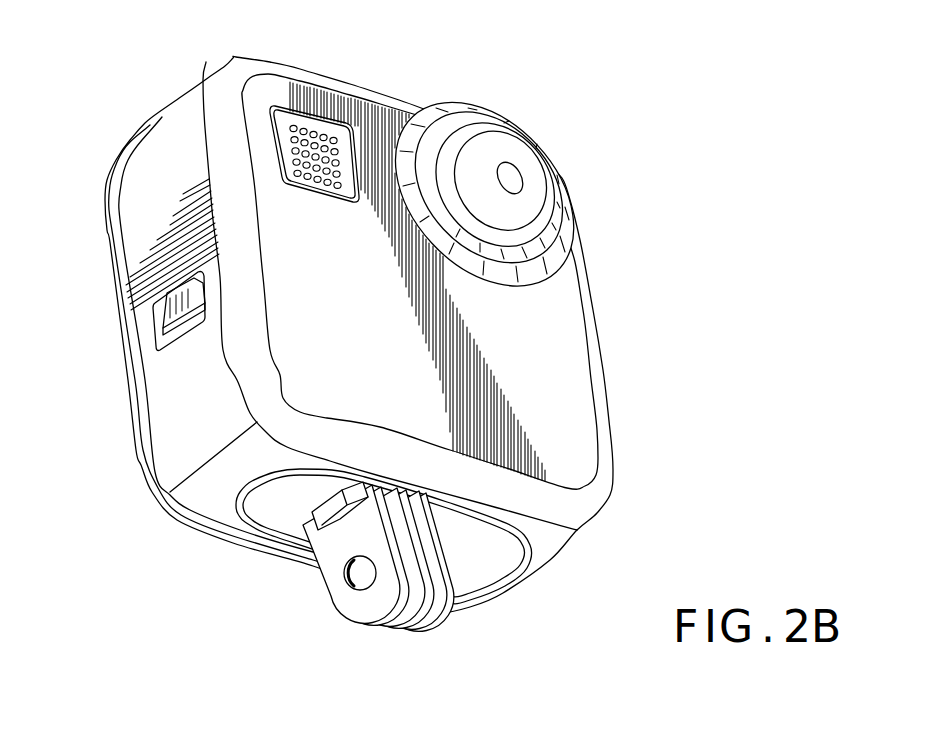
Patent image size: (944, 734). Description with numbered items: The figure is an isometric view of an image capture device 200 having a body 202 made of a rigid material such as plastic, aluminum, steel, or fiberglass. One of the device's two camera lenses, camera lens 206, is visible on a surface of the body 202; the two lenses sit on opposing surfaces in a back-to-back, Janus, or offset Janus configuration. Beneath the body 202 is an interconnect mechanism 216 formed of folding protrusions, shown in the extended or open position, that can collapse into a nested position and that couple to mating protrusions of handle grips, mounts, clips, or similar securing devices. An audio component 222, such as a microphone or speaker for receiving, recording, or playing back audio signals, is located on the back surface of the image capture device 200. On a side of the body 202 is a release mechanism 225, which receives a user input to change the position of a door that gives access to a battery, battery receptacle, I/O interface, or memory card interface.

The image capture device 200 is at (615, 118).
The body 202 is at (597, 337).
The camera lens 206 is at (512, 181).
The interconnect mechanism 216 is at (332, 566).
The audio component 222 is at (293, 126).
The release mechanism 225 is at (160, 321).